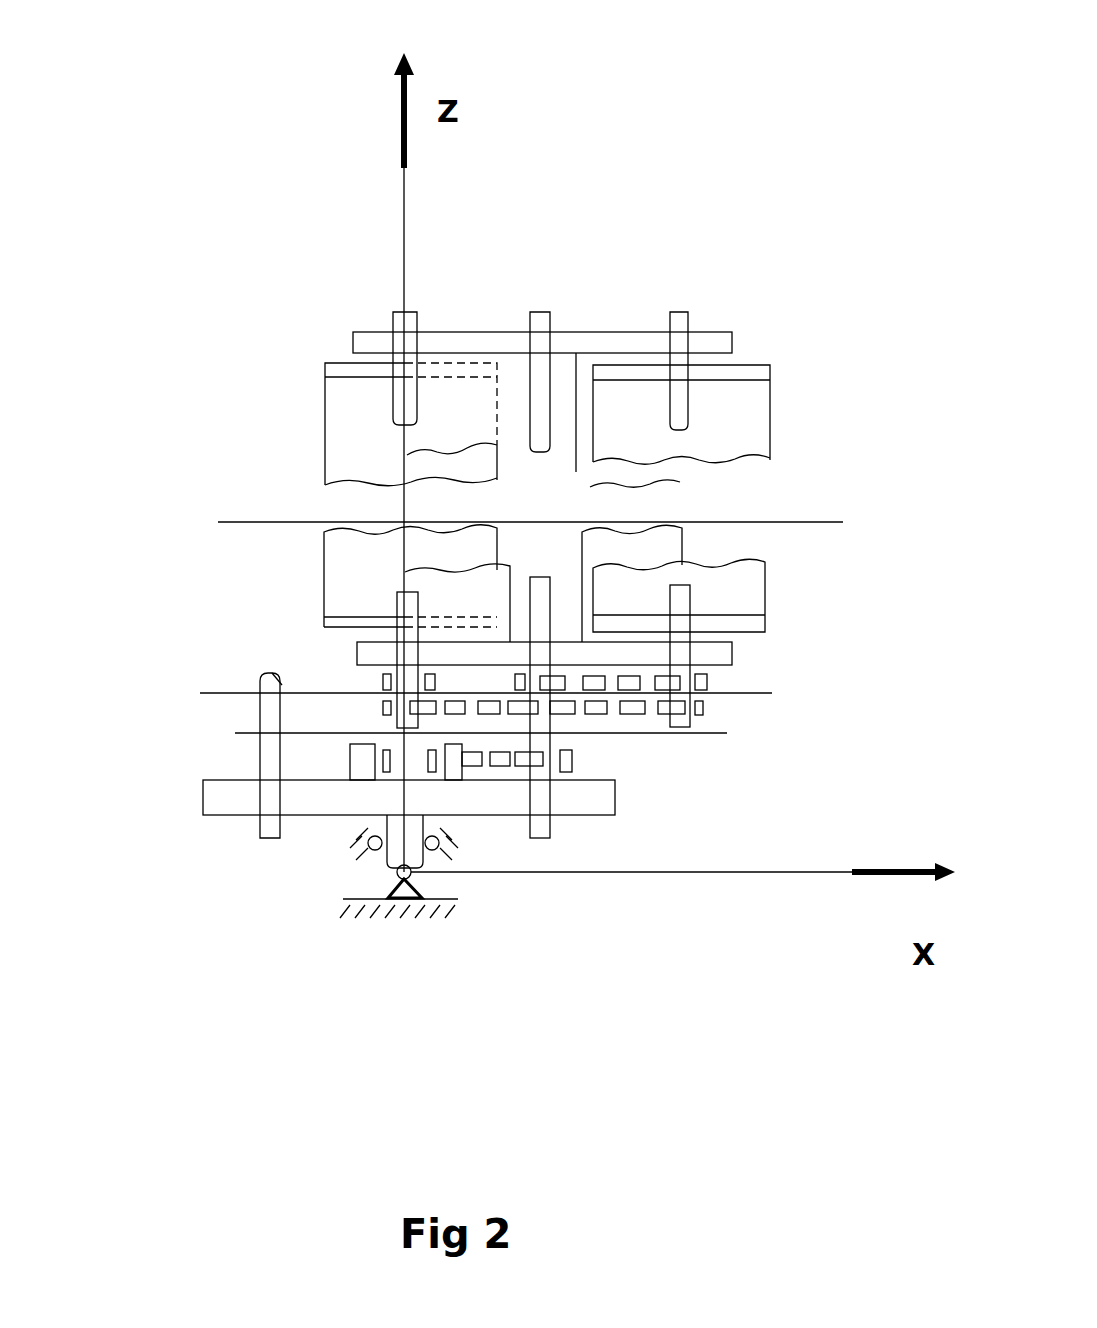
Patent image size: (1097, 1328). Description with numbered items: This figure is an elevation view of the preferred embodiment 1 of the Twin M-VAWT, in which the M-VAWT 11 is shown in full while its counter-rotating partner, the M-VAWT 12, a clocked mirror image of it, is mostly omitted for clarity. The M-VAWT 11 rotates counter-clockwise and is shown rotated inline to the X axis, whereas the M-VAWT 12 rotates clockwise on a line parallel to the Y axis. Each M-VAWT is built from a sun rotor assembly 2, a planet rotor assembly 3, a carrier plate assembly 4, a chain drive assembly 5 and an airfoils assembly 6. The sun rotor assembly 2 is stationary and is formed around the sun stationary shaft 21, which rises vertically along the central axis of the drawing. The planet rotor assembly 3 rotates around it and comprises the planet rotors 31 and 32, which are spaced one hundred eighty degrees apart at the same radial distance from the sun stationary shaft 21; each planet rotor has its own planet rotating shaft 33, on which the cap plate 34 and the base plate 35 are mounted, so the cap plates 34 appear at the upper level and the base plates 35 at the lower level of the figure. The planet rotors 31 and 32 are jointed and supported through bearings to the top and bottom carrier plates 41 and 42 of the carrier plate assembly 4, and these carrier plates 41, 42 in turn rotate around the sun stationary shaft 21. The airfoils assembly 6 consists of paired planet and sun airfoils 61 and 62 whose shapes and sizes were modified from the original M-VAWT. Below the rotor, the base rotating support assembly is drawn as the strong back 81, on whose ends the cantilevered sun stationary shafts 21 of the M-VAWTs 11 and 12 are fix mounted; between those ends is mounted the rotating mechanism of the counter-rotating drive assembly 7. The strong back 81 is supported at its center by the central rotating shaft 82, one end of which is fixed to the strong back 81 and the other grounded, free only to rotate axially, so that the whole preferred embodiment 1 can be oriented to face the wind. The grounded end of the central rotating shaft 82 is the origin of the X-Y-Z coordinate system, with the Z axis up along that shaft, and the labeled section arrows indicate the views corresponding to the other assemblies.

The preferred embodiment 1 is at (838, 115).
The M-VAWT 11 is at (840, 222).
The M-VAWT 12 is at (147, 253).
The sun rotor assembly 2 is at (808, 953).
The planet rotor assembly 3 is at (890, 1072).
The carrier plate assembly 4 is at (200, 693).
The chain drive assembly 5 is at (132, 693).
The airfoils assembly 6 is at (235, 733).
The counter-rotating drive assembly 7 is at (218, 523).
The sun stationary shaft 21 is at (546, 313).
The planet rotor 31 is at (683, 312).
The planet rotor 32 is at (401, 314).
The planet rotating shaft 33 is at (517, 442).
The cap plate 34 is at (326, 366).
The base plate 35 is at (323, 628).
The top carrier plate 41 is at (722, 328).
The bottom carrier plate 42 is at (712, 663).
The planet airfoil 61 is at (325, 548).
The sun airfoil 62 is at (507, 563).
The strong back 81 is at (580, 813).
The central rotating shaft 82 is at (383, 860).